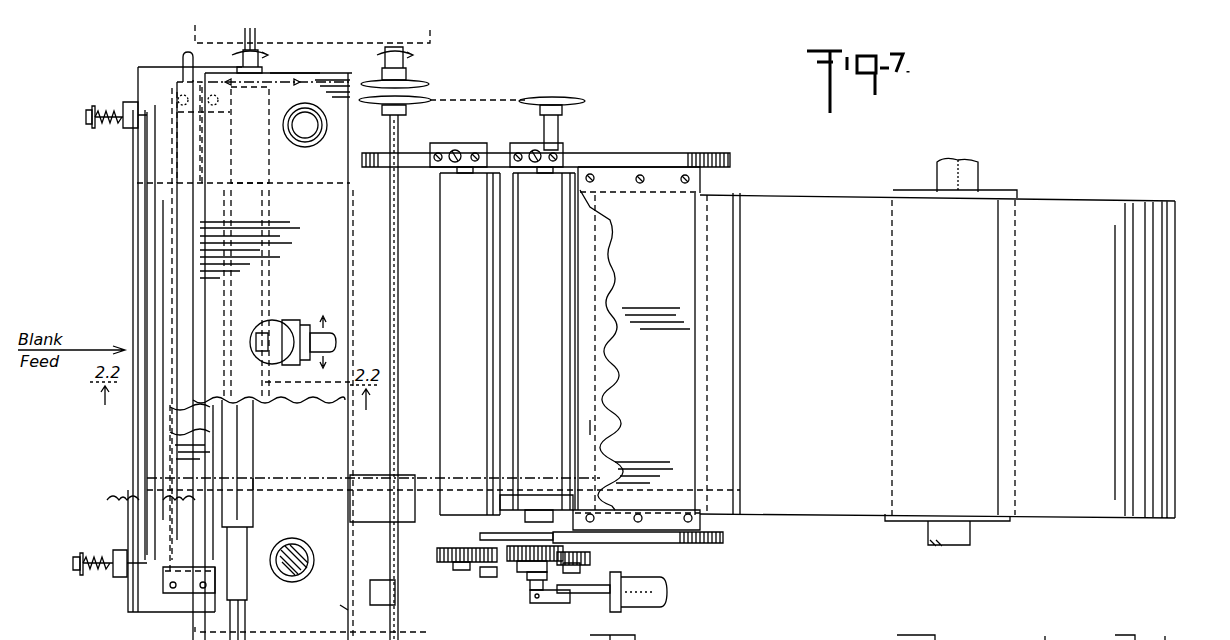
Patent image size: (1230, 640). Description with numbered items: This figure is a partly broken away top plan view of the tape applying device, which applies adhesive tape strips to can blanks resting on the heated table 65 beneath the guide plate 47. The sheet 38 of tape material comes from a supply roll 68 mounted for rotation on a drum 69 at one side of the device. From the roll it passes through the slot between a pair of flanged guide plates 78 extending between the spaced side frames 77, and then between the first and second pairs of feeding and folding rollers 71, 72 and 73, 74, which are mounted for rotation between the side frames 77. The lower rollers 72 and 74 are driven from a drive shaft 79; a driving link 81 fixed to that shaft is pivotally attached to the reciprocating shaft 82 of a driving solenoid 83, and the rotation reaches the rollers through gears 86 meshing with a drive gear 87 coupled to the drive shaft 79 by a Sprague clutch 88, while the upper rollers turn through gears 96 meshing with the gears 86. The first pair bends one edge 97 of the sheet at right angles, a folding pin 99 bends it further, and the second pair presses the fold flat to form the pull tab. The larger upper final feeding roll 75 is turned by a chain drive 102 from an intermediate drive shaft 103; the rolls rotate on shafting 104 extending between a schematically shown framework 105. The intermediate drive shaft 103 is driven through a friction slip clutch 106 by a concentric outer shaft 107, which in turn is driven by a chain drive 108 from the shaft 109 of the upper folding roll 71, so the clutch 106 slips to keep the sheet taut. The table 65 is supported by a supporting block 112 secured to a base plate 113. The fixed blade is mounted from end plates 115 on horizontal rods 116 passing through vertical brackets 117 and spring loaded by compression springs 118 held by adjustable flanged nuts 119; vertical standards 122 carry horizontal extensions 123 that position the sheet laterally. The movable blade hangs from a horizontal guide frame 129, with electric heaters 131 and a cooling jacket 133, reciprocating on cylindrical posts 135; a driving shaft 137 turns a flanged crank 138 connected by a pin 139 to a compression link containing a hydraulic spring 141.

The sheet of tape material 38 is at (940, 317).
The guide plate 47 is at (137, 256).
The table 65 is at (137, 292).
The supply roll 68 is at (1058, 198).
The drum 69 is at (1000, 522).
The first feeding and folding roller 71 is at (550, 330).
The first feeding and folding roller 72 is at (592, 426).
The second feeding and folding roller 73 is at (456, 330).
The second feeding and folding roller 74 is at (510, 492).
The final feeding roll 75 is at (236, 432).
The side frames 77 is at (706, 158).
The guide plates 78 is at (665, 262).
The drive shaft 79 is at (533, 590).
The driving link 81 is at (553, 604).
The reciprocating shaft 82 is at (600, 594).
The driving solenoid 83 is at (667, 590).
The gears 86 is at (480, 572).
The drive gear 87 is at (517, 573).
The Sprague clutch 88 is at (558, 545).
The gears 96 is at (437, 552).
The edge of the tape sheet 97 is at (286, 478).
The folding pin 99 is at (527, 496).
The chain drive 102 is at (290, 80).
The intermediate drive shaft 103 is at (394, 48).
The shafting 104 is at (252, 46).
The framework 105 is at (436, 39).
The friction slip clutch 106 is at (392, 505).
The outer shaft 107 is at (399, 240).
The chain drive 108 is at (474, 100).
The shaft 109 is at (557, 128).
The supporting block 112 is at (262, 493).
The base plate 113 is at (338, 607).
The end plates 115 is at (142, 150).
The horizontal rods 116 is at (86, 113).
The vertical brackets 117 is at (125, 120).
The compression springs 118 is at (100, 108).
The flanged nuts 119 is at (92, 122).
The vertical standards 122 is at (194, 590).
The horizontal extensions 123 is at (212, 190).
The guide frame 129 is at (299, 212).
The electric heaters 131 is at (148, 452).
The cooling jacket 133 is at (178, 207).
The cylindrical posts 135 is at (302, 118).
The driving shaft 137 is at (325, 330).
The flanged crank 138 is at (290, 320).
The pin 139 is at (258, 338).
The hydraulic spring 141 is at (262, 318).